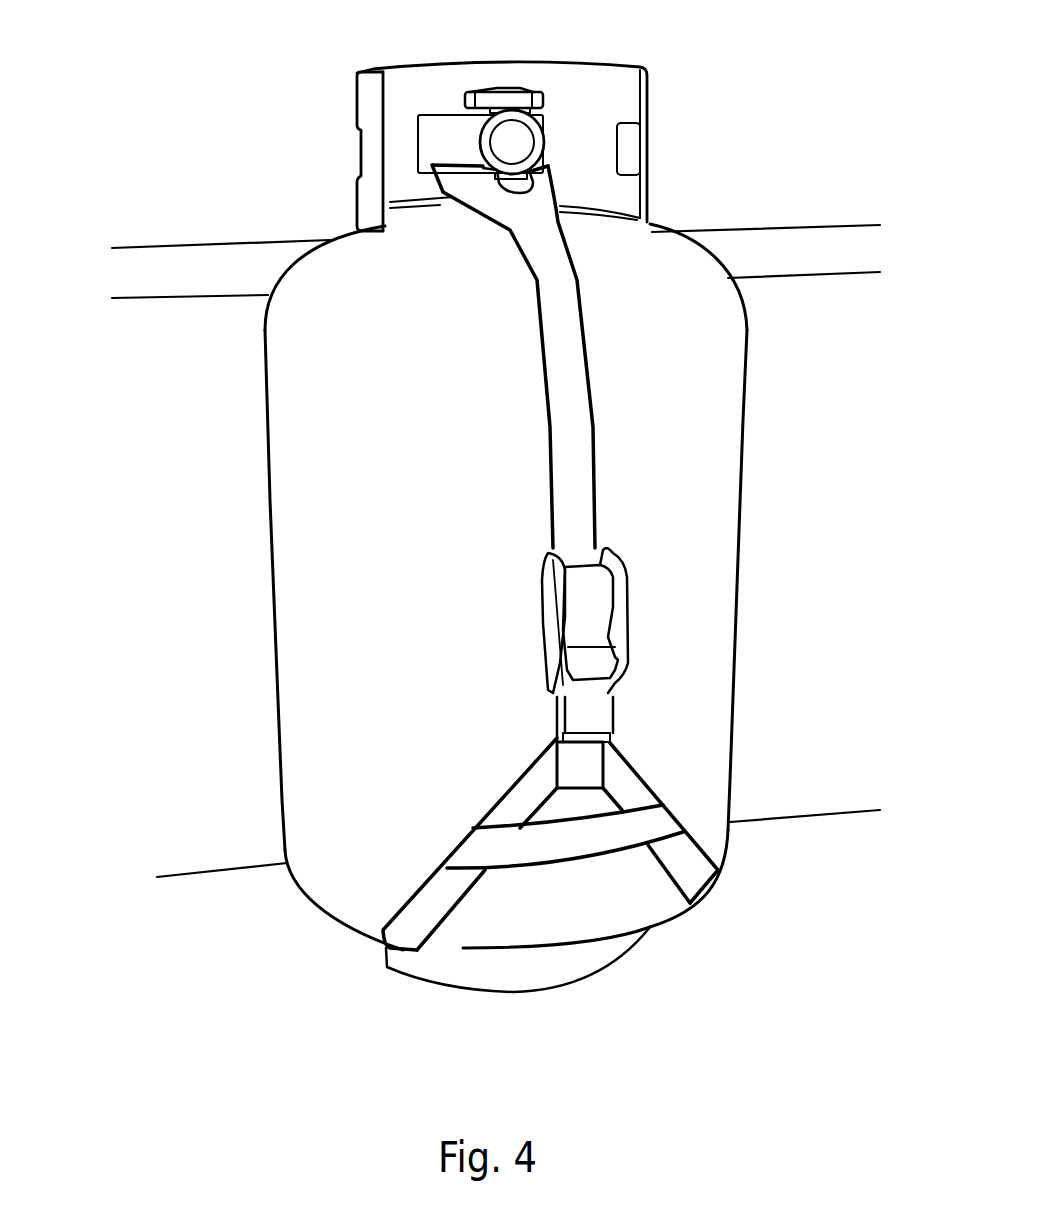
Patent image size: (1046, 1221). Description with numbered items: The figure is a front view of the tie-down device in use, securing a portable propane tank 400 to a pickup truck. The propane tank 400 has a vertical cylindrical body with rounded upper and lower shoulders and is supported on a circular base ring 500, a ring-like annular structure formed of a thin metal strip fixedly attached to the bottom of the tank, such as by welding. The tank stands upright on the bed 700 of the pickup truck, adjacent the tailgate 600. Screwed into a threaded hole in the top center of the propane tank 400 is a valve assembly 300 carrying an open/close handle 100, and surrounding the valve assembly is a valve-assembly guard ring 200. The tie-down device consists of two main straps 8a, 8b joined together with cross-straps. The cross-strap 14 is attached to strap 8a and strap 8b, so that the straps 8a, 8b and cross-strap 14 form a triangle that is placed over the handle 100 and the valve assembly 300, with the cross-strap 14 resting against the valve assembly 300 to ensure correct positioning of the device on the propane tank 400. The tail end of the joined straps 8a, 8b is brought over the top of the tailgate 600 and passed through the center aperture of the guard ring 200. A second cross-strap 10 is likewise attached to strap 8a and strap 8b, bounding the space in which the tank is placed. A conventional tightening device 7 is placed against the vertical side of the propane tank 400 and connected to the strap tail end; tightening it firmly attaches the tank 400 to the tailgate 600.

The open/close handle 100 is at (540, 90).
The propane tank valve-assembly guard ring 200 is at (429, 107).
The propane tank valve-assembly 300 is at (512, 144).
The cross-strap 14 is at (448, 193).
The propane tank 400 is at (700, 434).
The propane tank base ring 500 is at (545, 981).
The tailgate of a pickup truck 600 is at (850, 394).
The bed of a pickup truck 700 is at (247, 966).
The main strap 8a is at (543, 470).
The main strap 8b is at (653, 767).
The tightening device 7 is at (633, 620).
The cross-strap 10 is at (607, 833).